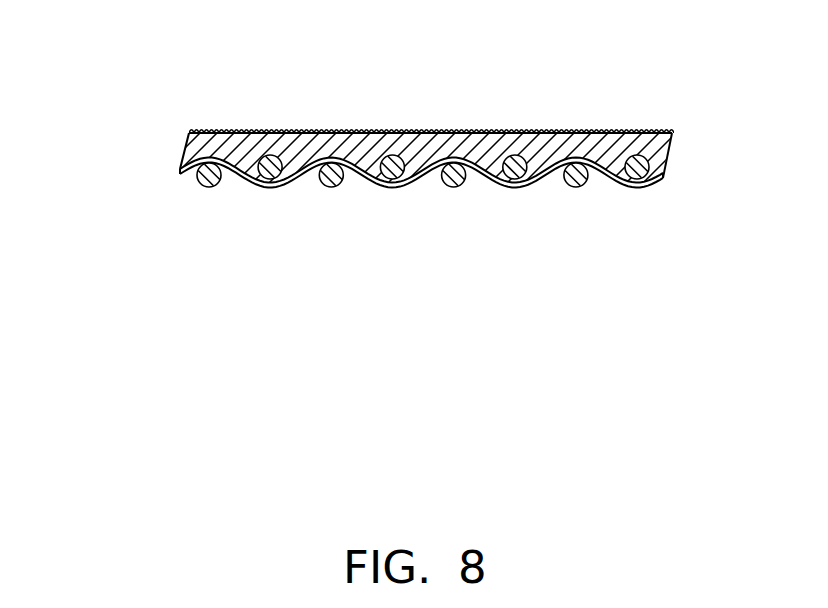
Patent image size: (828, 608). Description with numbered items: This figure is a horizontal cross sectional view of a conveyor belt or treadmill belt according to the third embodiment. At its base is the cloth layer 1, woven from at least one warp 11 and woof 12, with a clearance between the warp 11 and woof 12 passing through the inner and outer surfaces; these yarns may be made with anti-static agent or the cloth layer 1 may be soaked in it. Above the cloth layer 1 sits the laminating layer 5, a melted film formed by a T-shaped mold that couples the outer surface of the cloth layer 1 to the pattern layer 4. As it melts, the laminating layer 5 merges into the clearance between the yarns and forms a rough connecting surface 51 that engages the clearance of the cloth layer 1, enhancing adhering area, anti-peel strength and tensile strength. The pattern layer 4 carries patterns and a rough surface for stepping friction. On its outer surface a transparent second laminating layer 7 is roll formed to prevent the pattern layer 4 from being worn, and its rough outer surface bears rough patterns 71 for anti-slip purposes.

The cloth layer 1 is at (414, 148).
The pattern layer 4 is at (428, 140).
The laminating layer 5 is at (520, 150).
The second laminating layer 7 is at (415, 68).
The rough patterns 71 is at (472, 129).
The connecting surface 51 is at (381, 170).
The warp 11 is at (328, 184).
The woof 12 is at (414, 178).